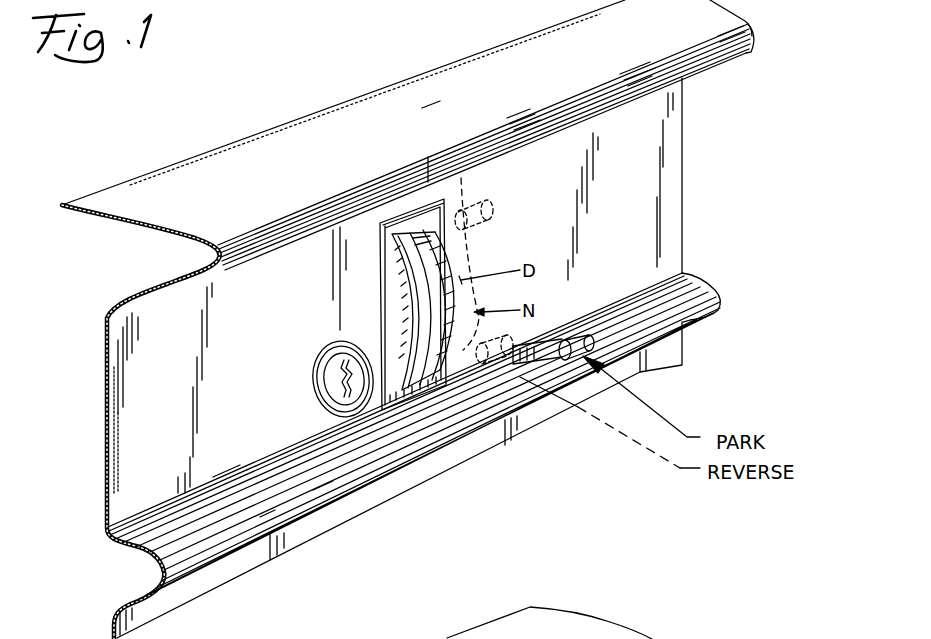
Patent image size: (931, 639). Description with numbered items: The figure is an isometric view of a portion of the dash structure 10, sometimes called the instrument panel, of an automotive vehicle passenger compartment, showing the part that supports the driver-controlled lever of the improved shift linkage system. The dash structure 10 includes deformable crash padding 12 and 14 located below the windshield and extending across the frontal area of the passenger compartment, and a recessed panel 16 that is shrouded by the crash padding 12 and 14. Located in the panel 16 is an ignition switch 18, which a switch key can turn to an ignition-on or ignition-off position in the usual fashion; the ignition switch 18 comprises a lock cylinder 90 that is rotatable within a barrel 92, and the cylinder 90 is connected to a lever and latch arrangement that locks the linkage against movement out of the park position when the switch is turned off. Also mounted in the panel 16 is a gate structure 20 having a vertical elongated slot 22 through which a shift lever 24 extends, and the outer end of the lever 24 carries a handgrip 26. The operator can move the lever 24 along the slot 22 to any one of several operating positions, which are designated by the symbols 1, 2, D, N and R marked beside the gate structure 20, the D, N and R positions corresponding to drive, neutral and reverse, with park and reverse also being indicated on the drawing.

The vehicle dash structure 10 is at (403, 319).
The crash padding 12 is at (704, 63).
The crash padding 14 is at (157, 580).
The recessed panel 16 is at (123, 365).
The ignition switch 18 is at (327, 407).
The gate structure 20 is at (413, 300).
The vertical elongated slot 22 is at (403, 278).
The shift lever 24 is at (428, 157).
The handgrip 26 is at (480, 131).
The lock cylinder 90 is at (337, 382).
The barrel 92 is at (318, 360).
The operating position symbol 1 is at (495, 207).
The operating position symbol 2 is at (468, 255).